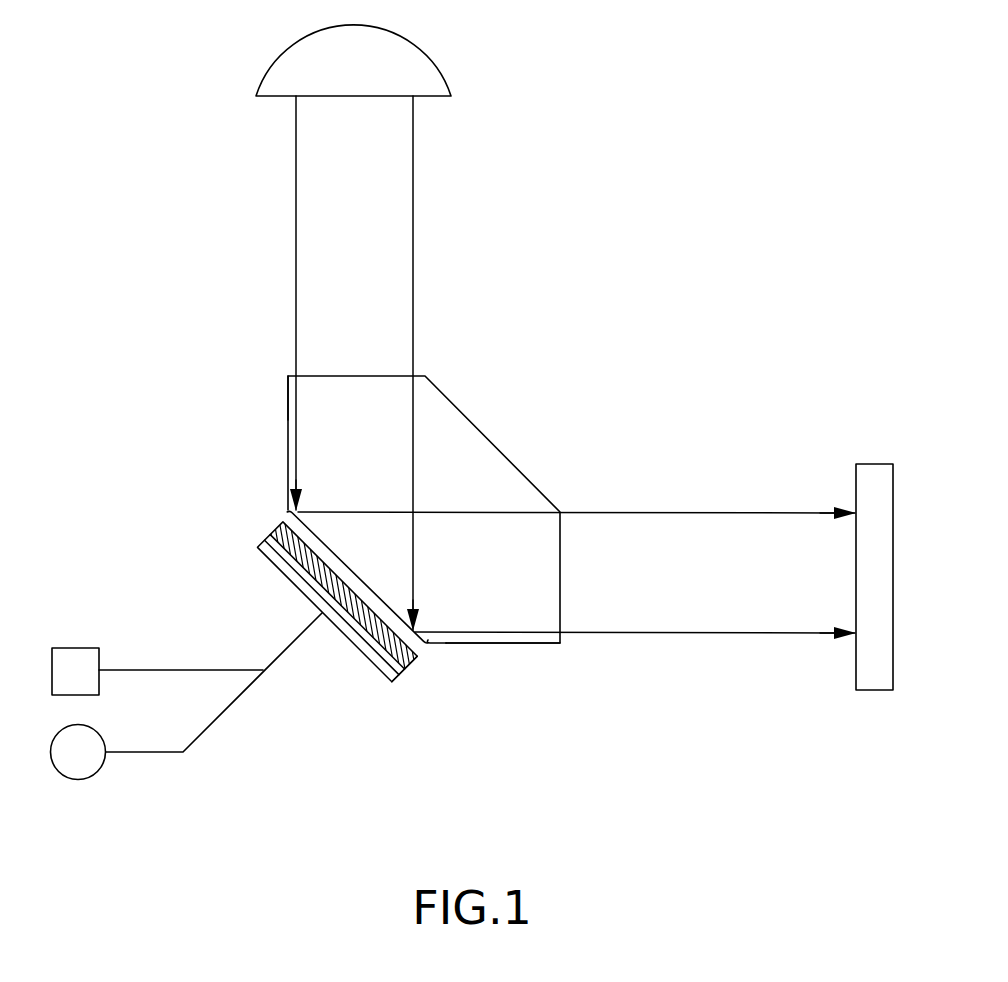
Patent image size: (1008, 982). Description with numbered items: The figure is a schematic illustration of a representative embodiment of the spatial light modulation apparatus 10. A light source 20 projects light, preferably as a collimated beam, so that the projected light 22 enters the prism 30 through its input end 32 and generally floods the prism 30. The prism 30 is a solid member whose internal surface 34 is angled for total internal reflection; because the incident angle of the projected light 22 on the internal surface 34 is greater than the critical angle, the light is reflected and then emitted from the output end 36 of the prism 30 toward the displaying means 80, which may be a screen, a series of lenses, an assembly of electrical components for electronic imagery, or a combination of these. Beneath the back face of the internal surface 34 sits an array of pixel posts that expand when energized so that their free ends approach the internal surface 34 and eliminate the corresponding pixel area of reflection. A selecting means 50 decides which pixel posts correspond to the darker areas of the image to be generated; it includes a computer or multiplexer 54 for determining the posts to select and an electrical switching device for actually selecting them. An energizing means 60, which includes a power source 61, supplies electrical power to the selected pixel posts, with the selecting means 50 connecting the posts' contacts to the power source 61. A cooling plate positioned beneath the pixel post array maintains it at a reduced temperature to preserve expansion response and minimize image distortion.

The spatial light modulation apparatus 10 is at (98, 230).
The light source 20 is at (442, 59).
The projected light 22 is at (296, 204).
The prism 30 is at (463, 397).
The input end 32 is at (292, 374).
The internal surface 34 is at (433, 648).
The output end 36 is at (563, 645).
The selecting means 50 is at (163, 660).
The computer or multiplexer 54 is at (60, 647).
The energizing means 60 is at (214, 739).
The power source 61 is at (78, 781).
The displaying means 80 is at (873, 459).